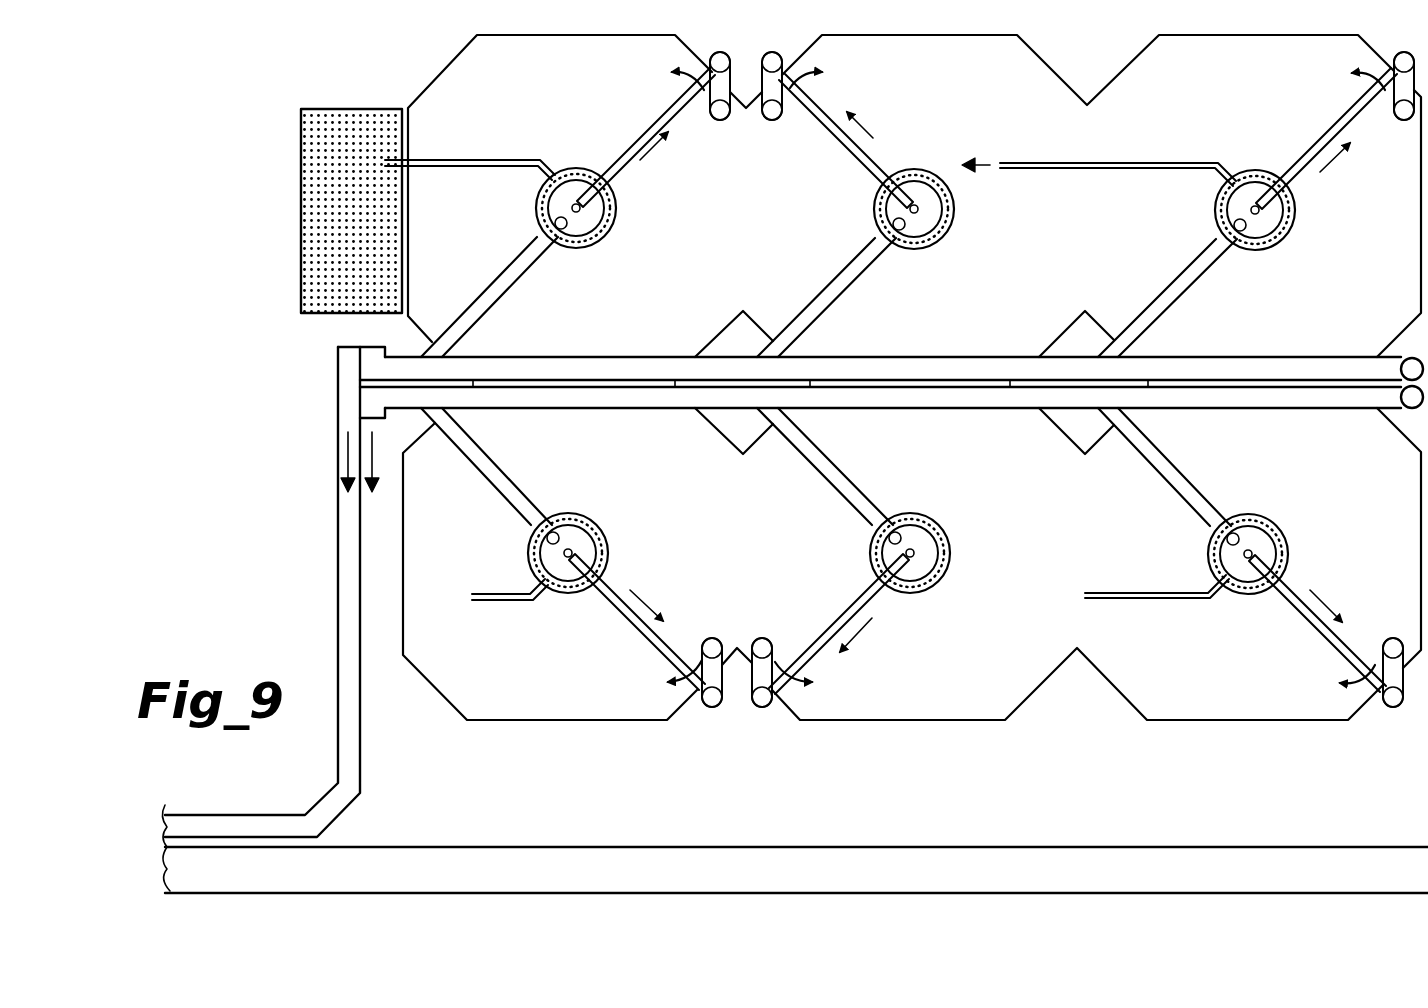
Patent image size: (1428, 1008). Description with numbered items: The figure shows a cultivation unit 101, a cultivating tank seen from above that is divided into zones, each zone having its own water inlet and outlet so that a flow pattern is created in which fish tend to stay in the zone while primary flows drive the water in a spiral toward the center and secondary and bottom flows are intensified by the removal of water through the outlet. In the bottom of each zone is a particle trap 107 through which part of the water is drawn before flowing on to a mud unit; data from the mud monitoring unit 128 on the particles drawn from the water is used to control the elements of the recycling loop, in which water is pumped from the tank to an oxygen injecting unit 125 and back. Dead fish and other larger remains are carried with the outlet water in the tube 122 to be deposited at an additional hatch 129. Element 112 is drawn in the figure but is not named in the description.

The cultivation unit 101 is at (1010, 726).
The particle trap 107 is at (924, 580).
The valve actuating arm 112 is at (1167, 598).
The tube 122 is at (338, 618).
The oxygen injecting unit 125 is at (729, 648).
The mud monitoring unit 128 is at (300, 152).
The additional hatch 129 is at (338, 458).